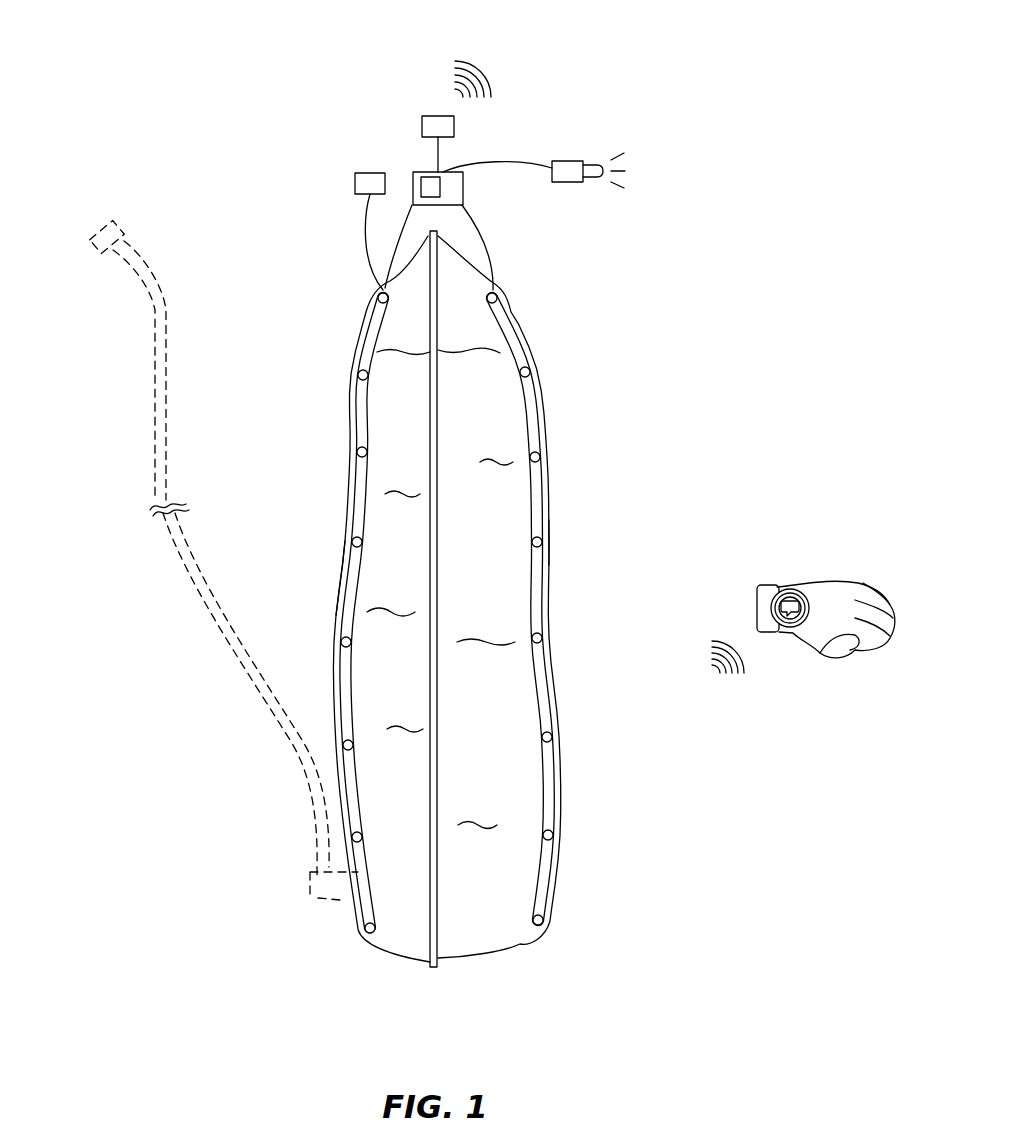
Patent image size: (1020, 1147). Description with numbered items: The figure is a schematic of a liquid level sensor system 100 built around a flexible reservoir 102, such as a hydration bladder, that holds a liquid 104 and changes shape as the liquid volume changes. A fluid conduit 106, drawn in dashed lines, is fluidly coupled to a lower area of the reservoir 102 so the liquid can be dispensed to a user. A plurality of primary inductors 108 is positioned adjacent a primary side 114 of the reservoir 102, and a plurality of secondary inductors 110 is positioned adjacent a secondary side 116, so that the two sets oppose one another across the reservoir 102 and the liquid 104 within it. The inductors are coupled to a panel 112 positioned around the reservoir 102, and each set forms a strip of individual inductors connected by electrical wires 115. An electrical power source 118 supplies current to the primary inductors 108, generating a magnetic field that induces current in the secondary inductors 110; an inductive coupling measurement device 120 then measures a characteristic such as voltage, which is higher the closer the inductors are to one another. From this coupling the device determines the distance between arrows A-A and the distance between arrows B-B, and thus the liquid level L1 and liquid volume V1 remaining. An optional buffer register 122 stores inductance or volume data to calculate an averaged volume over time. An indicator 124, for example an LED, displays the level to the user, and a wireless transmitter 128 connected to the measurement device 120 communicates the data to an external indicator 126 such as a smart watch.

The liquid level sensor system 100 is at (272, 45).
The flexible reservoir 102 is at (393, 527).
The liquid 104 is at (512, 605).
The fluid conduit 106 is at (146, 371).
The primary inductor 108 is at (352, 396).
The secondary inductor 110 is at (538, 377).
The panel 112 is at (333, 677).
The primary side 114 is at (325, 589).
The electrical wires 115 is at (348, 572).
The secondary side 116 is at (570, 530).
The electrical power source 118 is at (355, 185).
The inductive coupling measurement device 120 is at (408, 151).
The buffer register 122 is at (418, 183).
The indicator 124 is at (568, 160).
The external indicator 126 is at (801, 567).
The wireless transmitter 128 is at (430, 116).
The liquid level L1 is at (494, 347).
The liquid volume V1 is at (505, 845).
The arrows A- A is at (354, 375).
The arrows B- B is at (357, 368).